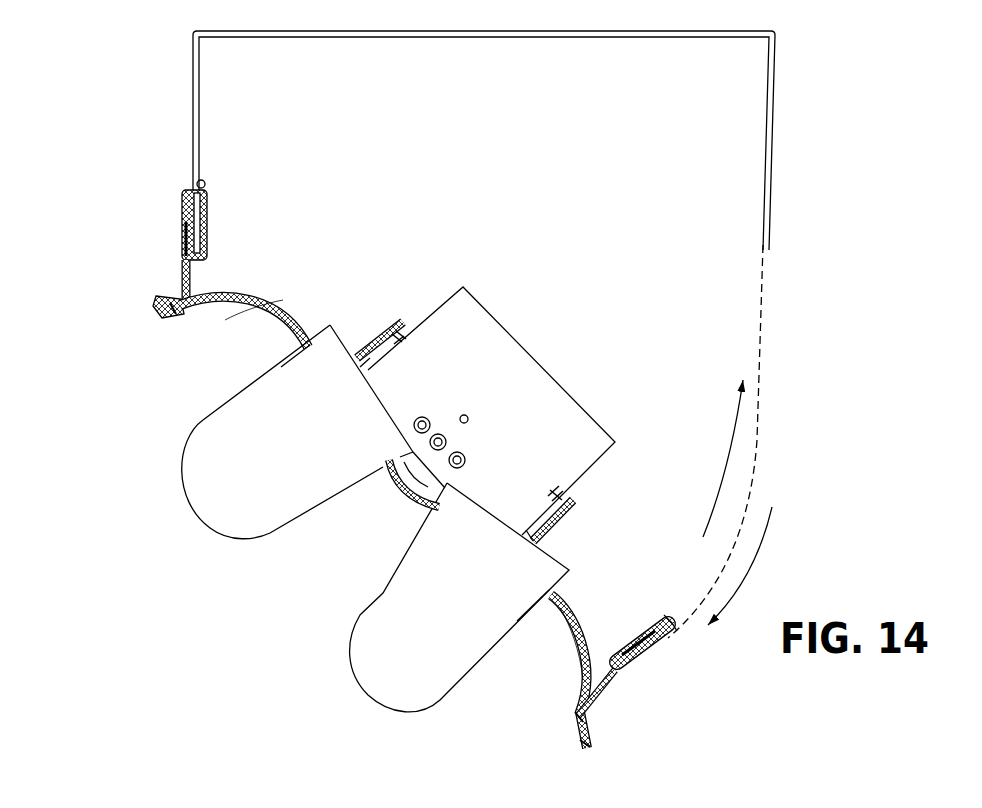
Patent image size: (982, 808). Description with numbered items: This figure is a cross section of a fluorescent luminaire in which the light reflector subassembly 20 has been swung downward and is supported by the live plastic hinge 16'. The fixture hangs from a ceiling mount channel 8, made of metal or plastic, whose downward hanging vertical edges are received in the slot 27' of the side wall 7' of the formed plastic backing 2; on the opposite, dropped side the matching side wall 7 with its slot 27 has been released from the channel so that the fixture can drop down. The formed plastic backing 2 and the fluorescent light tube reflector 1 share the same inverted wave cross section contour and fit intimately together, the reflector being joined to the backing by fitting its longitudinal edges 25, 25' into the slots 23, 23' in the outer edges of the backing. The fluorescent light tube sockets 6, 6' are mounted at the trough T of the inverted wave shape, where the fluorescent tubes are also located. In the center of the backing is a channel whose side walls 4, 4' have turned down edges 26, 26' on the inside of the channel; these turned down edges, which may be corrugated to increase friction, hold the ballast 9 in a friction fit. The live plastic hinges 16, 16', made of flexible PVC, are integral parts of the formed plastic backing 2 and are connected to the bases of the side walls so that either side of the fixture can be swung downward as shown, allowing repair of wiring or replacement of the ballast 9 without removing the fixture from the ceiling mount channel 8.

The ceiling mount channel 8 is at (771, 172).
The side wall of plastic backing 7' is at (163, 220).
The slot in side wall of formed plastic backing 27' is at (146, 239).
The live plastic hinge 16' is at (143, 280).
The edge of fluorescent light tube reflector 25' is at (141, 309).
The slot in outer edge of formed plastic backing 23' is at (152, 348).
The formed plastic backing 2 is at (263, 300).
The fluorescent light tube reflector 1 is at (252, 323).
The inverted wave shape trough T is at (268, 326).
The ballast 9 is at (530, 447).
The side wall of center channel of formed plastic backing 4' is at (378, 312).
The turned down edge of side wall of center channel 26' is at (409, 300).
The side wall of center channel of formed plastic backing 4 is at (573, 529).
The turned down edge of side wall of center channel 26 is at (597, 493).
The fluorescent light tube socket 6' is at (292, 471).
The fluorescent light tube socket 6 is at (455, 615).
The light reflector subassembly 20 is at (125, 447).
The live plastic hinge 16 is at (621, 710).
The side wall of plastic backing 7 is at (660, 659).
The slot in side wall of formed plastic backing 27 is at (659, 679).
The edge of fluorescent light tube reflector 25 is at (606, 757).
The slot in outer edge of formed plastic backing 23 is at (544, 738).